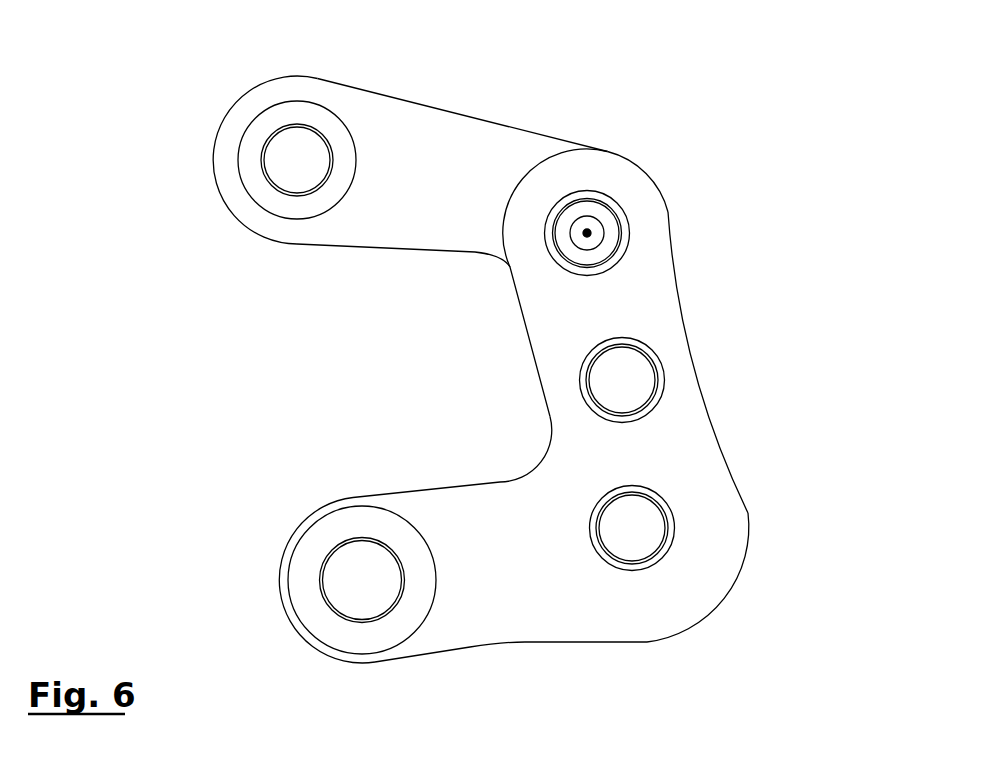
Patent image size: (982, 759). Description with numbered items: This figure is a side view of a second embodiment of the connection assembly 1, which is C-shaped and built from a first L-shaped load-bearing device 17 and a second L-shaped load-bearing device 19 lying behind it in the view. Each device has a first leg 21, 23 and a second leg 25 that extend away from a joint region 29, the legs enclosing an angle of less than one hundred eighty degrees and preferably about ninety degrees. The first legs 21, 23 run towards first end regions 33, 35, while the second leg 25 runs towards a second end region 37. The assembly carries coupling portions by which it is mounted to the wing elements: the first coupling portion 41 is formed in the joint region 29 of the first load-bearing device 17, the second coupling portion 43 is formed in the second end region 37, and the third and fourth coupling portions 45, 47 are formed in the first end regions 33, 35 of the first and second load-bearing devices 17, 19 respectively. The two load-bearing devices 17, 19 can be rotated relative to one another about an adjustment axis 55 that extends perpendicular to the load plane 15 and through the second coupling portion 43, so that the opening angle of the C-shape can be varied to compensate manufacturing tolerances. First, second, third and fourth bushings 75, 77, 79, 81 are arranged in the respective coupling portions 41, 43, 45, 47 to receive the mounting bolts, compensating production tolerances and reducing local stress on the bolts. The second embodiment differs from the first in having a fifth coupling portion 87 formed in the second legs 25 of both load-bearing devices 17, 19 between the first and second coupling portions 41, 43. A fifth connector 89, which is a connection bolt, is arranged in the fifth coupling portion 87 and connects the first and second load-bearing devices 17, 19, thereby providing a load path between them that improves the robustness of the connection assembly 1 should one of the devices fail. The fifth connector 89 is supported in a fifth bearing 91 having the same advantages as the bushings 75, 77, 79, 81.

The connection assembly 1 is at (760, 163).
The load plane 15 is at (409, 367).
The first load-bearing device 17 is at (570, 662).
The second load-bearing device 19 is at (521, 105).
The first leg 21 is at (508, 613).
The first leg 23 is at (393, 122).
The second leg 25 is at (642, 308).
The joint region 29 is at (705, 563).
The first end region 33 is at (373, 505).
The first end region 35 is at (343, 225).
The second end region 37 is at (643, 190).
The first coupling portion 41 is at (640, 532).
The second coupling portion 43 is at (612, 232).
The third coupling portion 45 is at (362, 582).
The fourth coupling portion 47 is at (287, 168).
The adjustment axis 55 is at (588, 228).
The first bushing 75 is at (675, 520).
The second bushing 77 is at (605, 198).
The third bushing 79 is at (358, 642).
The fourth bushing 81 is at (247, 175).
The fifth coupling portion 87 is at (638, 370).
The fifth connector 89 is at (633, 390).
The fifth bearing 91 is at (648, 356).